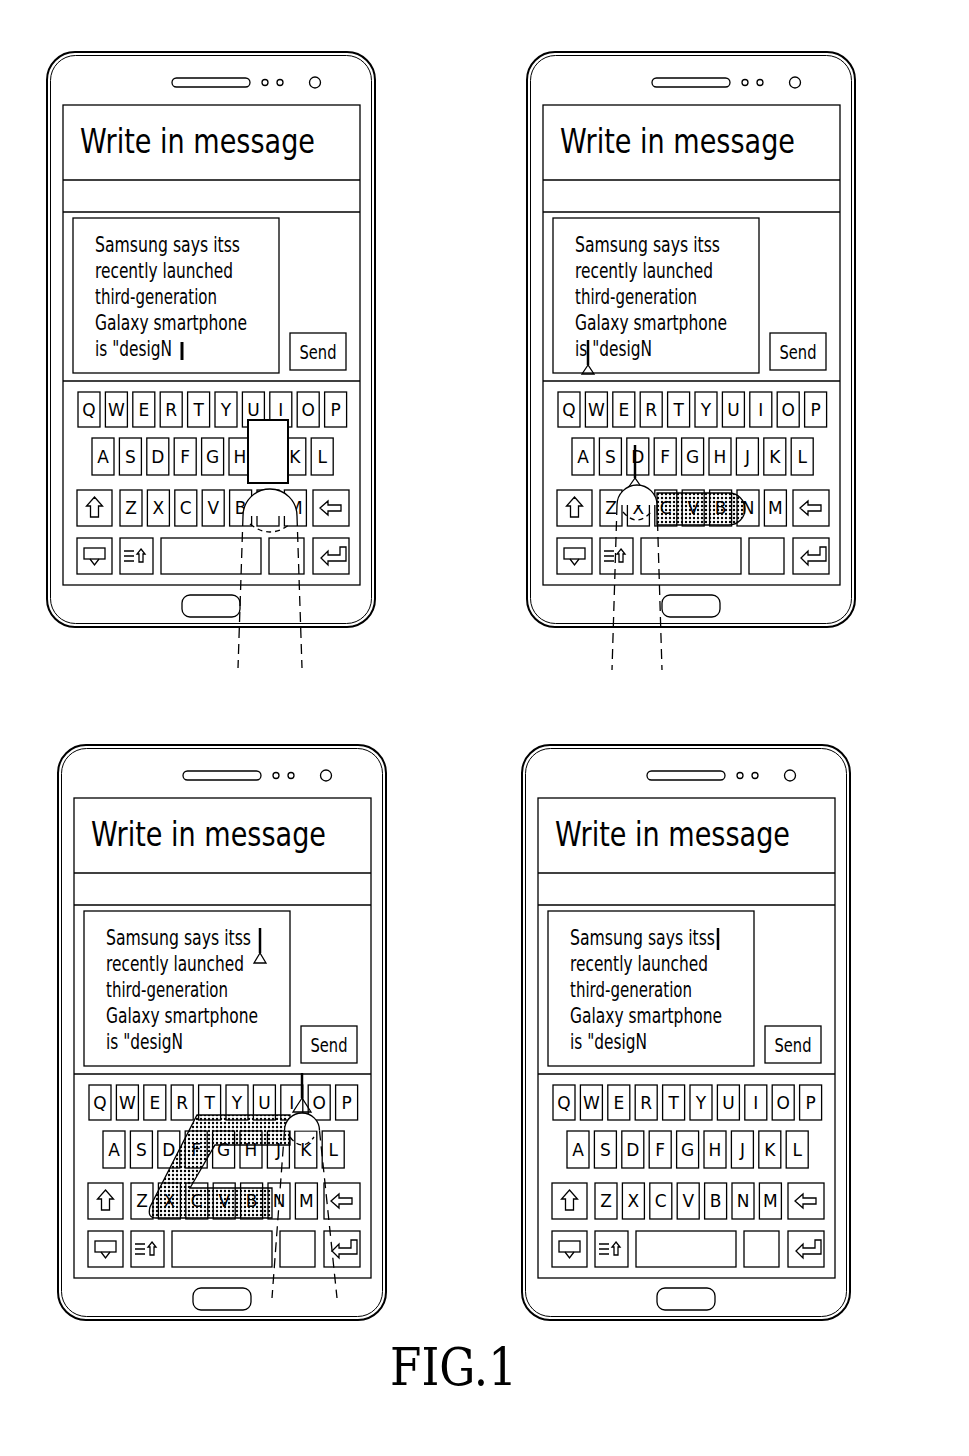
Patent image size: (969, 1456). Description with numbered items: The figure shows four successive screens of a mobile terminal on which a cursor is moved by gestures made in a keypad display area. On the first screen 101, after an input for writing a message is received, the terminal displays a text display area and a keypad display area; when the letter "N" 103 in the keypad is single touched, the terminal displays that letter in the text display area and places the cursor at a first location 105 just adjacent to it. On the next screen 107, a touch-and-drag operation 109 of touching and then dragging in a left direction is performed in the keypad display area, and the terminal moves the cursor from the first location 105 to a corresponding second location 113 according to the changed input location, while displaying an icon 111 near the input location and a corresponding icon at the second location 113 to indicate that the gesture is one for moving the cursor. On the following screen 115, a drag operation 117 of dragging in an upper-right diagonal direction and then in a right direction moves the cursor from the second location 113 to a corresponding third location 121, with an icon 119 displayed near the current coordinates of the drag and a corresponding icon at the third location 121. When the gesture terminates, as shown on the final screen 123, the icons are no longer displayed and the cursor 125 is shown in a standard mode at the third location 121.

The screen 101 is at (214, 52).
The letter "N" 103 is at (290, 432).
The first location 105 is at (186, 350).
The screen 107 is at (691, 316).
The touch-and-drag operation 109 is at (704, 581).
The icon 111 is at (557, 473).
The second location 113 is at (533, 360).
The screen 115 is at (222, 1009).
The drag operation 117 is at (219, 1241).
The icon 119 is at (368, 1089).
The third location 121 is at (297, 944).
The screen 123 is at (686, 1009).
The cursor 125 is at (757, 936).